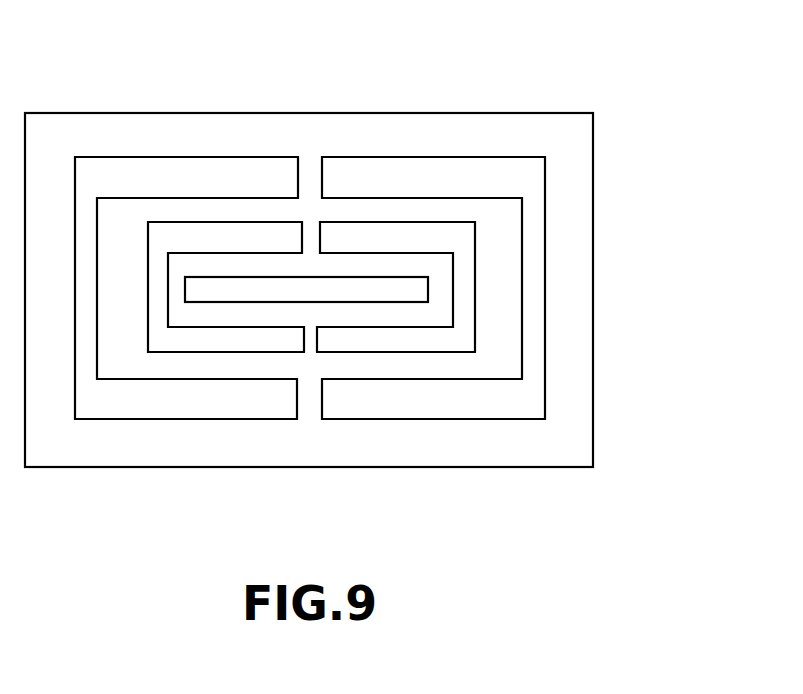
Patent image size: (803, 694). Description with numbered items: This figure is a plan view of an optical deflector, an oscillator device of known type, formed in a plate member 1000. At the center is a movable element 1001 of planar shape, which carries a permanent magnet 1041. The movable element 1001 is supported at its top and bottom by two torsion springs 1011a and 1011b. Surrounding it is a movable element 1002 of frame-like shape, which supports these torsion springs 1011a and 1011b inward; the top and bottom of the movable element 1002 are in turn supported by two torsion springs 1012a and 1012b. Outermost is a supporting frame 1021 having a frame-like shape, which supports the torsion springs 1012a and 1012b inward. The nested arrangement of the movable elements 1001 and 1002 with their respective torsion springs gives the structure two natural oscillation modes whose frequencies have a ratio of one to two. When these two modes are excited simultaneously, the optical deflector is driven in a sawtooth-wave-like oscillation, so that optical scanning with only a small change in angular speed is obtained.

The plate member 1000 is at (604, 62).
The movable element 1001 is at (410, 313).
The movable element 1002 is at (513, 229).
The supporting frame 1021 is at (407, 128).
The permanent magnet 1041 is at (401, 289).
The torsion spring 1011a is at (310, 338).
The torsion spring 1011b is at (298, 213).
The torsion spring 1012a is at (307, 412).
The torsion spring 1012b is at (310, 178).